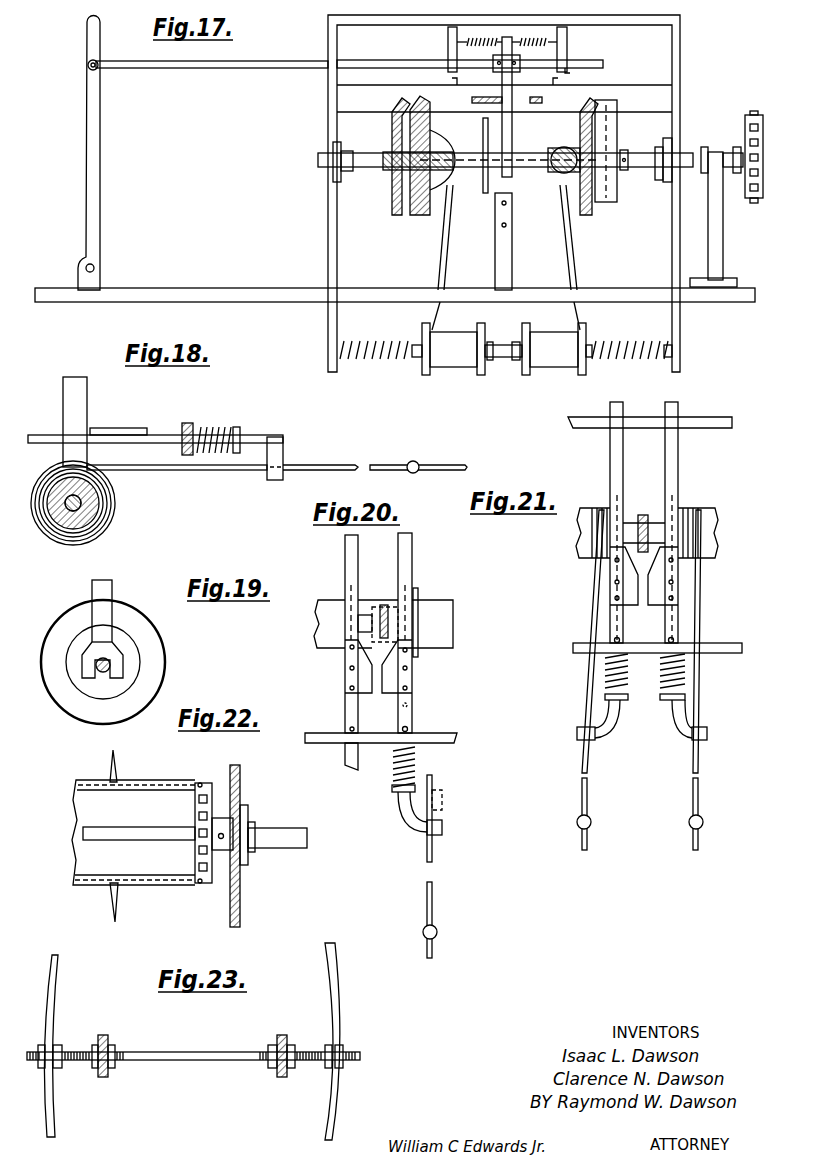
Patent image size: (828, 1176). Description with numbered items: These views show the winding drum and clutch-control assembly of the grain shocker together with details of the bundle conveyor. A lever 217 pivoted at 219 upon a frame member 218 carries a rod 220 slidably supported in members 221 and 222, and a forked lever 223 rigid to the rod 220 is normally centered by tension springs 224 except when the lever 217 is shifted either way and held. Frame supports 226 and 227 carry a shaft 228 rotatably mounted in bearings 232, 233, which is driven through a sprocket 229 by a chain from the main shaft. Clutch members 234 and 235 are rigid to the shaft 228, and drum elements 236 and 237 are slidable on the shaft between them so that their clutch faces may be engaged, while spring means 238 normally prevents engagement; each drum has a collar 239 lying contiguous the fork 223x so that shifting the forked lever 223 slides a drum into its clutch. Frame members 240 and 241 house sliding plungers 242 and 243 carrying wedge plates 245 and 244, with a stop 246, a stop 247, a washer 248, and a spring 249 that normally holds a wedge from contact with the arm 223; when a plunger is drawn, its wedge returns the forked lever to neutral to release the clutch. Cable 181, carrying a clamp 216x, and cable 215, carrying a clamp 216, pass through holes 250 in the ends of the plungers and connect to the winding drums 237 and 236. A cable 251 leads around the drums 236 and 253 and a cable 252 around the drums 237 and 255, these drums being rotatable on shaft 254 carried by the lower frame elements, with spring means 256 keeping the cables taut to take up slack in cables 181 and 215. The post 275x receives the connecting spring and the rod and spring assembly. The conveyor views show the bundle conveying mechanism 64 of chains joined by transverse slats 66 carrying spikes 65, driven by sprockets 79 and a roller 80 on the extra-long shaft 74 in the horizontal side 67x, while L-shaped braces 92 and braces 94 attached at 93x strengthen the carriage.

In FIG. 17, the lever 217 is at (96, 155).
In FIG. 17, the frame member 218 is at (172, 290).
In FIG. 17, the pivot 219 is at (94, 268).
In FIG. 17, the rod 220 is at (198, 68).
In FIG. 17, the support member 221 is at (447, 42).
In FIG. 17, the support member 222 is at (565, 60).
In FIG. 17, the forked lever 223 is at (512, 112).
In FIG. 18, the forked lever 223 is at (108, 360).
In FIG. 19, the forked lever 223 is at (112, 598).
In FIG. 20, the forked lever 223 is at (384, 605).
In FIG. 21, the forked lever 223 is at (643, 515).
In FIG. 19, the fork 223x is at (118, 660).
In FIG. 17, the tension springs 224 is at (532, 40).
In FIG. 17, the frame support 226 is at (684, 15).
In FIG. 17, the frame support 227 is at (328, 221).
In FIG. 17, the shaft 228 is at (673, 152).
In FIG. 19, the shaft 228 is at (87, 643).
In FIG. 17, the sprocket 229 is at (752, 112).
In FIG. 17, the bearing 232 is at (735, 133).
In FIG. 17, the bearing 233 is at (349, 182).
In FIG. 17, the clutch member 234 is at (396, 205).
In FIG. 17, the clutch member 235 is at (612, 140).
In FIG. 17, the drum element 236 is at (558, 154).
In FIG. 20, the drum element 236 is at (447, 602).
In FIG. 21, the drum element 236 is at (716, 520).
In FIG. 17, the drum element 237 is at (415, 117).
In FIG. 18, the drum element 237 is at (83, 503).
In FIG. 17, the spring means 238 is at (485, 196).
In FIG. 17, the collar 239 is at (500, 198).
In FIG. 19, the collar 239 is at (100, 670).
In FIG. 17, the frame member 240 is at (504, 98).
In FIG. 21, the frame member 240 is at (700, 417).
In FIG. 18, the frame member 241 is at (187, 423).
In FIG. 20, the frame member 241 is at (457, 735).
In FIG. 21, the frame member 241 is at (722, 643).
In FIG. 18, the sliding plunger 242 is at (155, 435).
In FIG. 21, the sliding plunger 242 is at (613, 456).
In FIG. 17, the sliding plunger 243 is at (526, 107).
In FIG. 20, the sliding plunger 243 is at (412, 561).
In FIG. 21, the sliding plunger 243 is at (678, 468).
In FIG. 17, the wedge plate 244 is at (542, 99).
In FIG. 20, the wedge plate 244 is at (412, 675).
In FIG. 21, the wedge plate 244 is at (658, 590).
In FIG. 18, the wedge plate 245 is at (100, 428).
In FIG. 20, the wedge plate 245 is at (345, 677).
In FIG. 21, the wedge plate 245 is at (612, 588).
In FIG. 20, the stop 246 is at (414, 728).
In FIG. 21, the stop 246 is at (680, 640).
In FIG. 21, the stop 247 is at (671, 712).
In FIG. 20, the washer 248 is at (412, 812).
In FIG. 21, the washer 248 is at (615, 720).
In FIG. 18, the spring 249 is at (216, 425).
In FIG. 20, the spring 249 is at (416, 762).
In FIG. 21, the spring 249 is at (686, 672).
In FIG. 20, the hole 250 is at (440, 834).
In FIG. 21, the hole 250 is at (707, 740).
In FIG. 17, the cable 251 is at (571, 263).
In FIG. 17, the cable 252 is at (446, 245).
In FIG. 17, the drum 253 is at (554, 349).
In FIG. 17, the shaft 254 is at (503, 362).
In FIG. 17, the drum 255 is at (453, 349).
In FIG. 17, the spring means 256 is at (367, 340).
In FIG. 17, the post 275x is at (508, 270).
In FIG. 18, the cable 181 is at (330, 453).
In FIG. 21, the cable 181 is at (582, 797).
In FIG. 20, the cable 215 is at (433, 781).
In FIG. 21, the cable 215 is at (699, 711).
In FIG. 20, the clamp 216 is at (437, 932).
In FIG. 21, the clamp 216 is at (703, 822).
In FIG. 18, the clamp 216x is at (413, 461).
In FIG. 21, the clamp 216x is at (591, 822).
In FIG. 22, the bundle conveying mechanism 64 is at (206, 886).
In FIG. 22, the spikes 65 is at (116, 763).
In FIG. 22, the transverse slats 66 is at (92, 886).
In FIG. 22, the side 67x is at (240, 783).
In FIG. 22, the shaft 74 is at (280, 828).
In FIG. 22, the sprockets 79 is at (209, 783).
In FIG. 22, the roller 80 is at (157, 832).
In FIG. 23, the braces 92 is at (53, 1000).
In FIG. 23, the attachment point 93x is at (165, 1052).
In FIG. 23, the braces 94 is at (106, 1036).